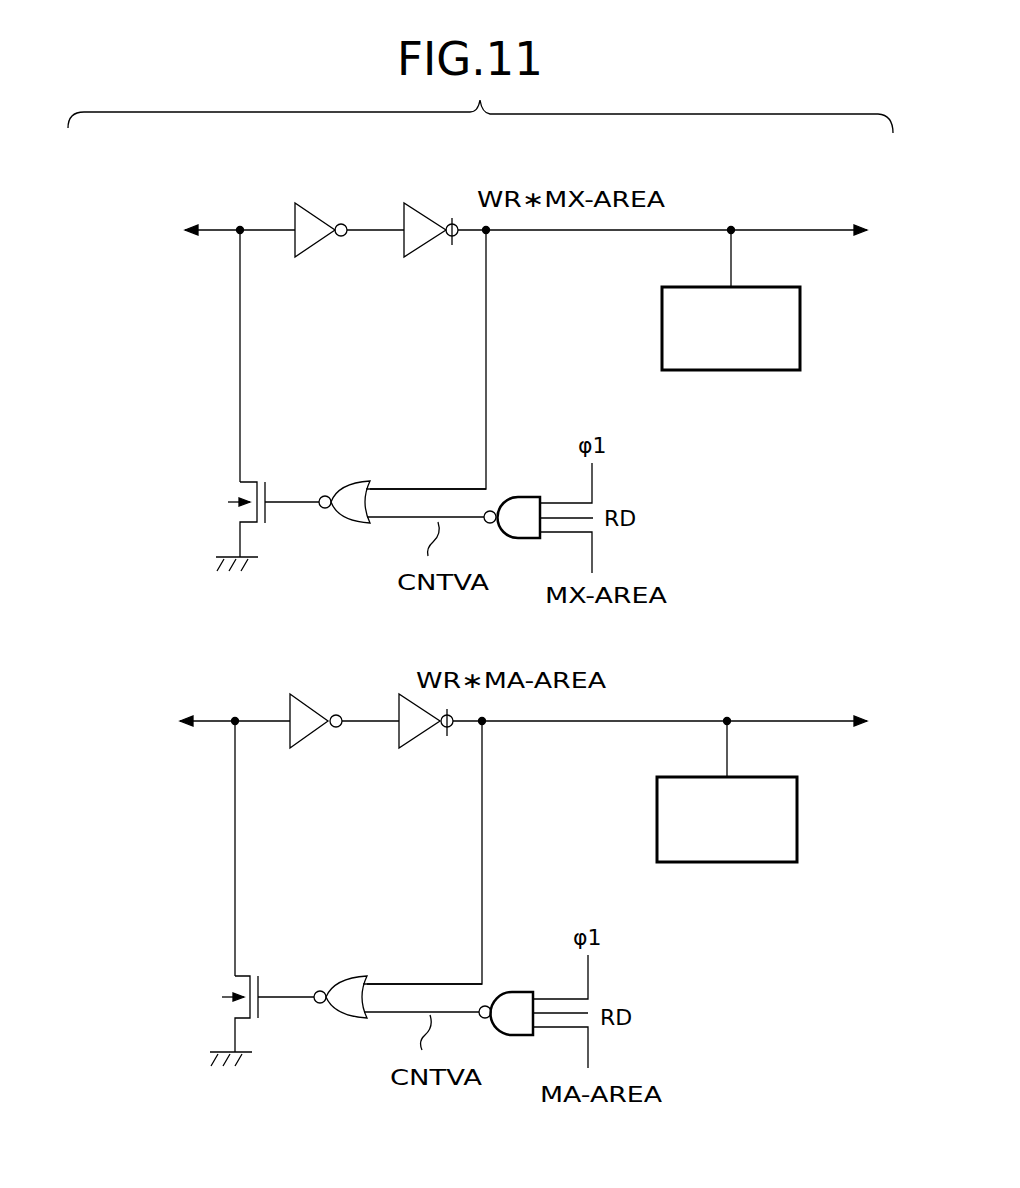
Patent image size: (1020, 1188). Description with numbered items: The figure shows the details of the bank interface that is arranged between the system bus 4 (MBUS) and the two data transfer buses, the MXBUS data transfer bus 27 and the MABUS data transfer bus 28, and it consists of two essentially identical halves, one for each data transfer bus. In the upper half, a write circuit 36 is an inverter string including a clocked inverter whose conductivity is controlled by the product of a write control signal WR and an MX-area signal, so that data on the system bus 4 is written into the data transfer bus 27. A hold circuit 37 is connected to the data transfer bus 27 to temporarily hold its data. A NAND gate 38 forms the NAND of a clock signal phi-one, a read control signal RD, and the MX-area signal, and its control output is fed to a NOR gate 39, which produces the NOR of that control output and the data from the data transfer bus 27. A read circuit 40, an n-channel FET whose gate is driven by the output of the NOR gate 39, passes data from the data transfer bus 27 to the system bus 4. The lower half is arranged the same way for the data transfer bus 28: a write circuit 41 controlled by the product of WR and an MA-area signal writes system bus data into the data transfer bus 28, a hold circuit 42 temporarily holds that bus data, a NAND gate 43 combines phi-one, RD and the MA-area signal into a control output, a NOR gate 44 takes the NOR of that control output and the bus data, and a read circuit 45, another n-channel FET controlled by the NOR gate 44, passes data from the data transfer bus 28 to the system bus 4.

The system bus 4 is at (180, 474).
The data transfer bus 27 is at (771, 229).
The data transfer bus 28 is at (768, 720).
The write circuit 36 is at (460, 190).
The hold circuit 37 is at (800, 298).
The NAND gate 38 is at (535, 495).
The NOR gate 39 is at (365, 480).
The read circuit 40 is at (228, 490).
The write circuit 41 is at (453, 765).
The hold circuit 42 is at (797, 790).
The NAND gate 43 is at (505, 990).
The NOR gate 44 is at (362, 975).
The read circuit 45 is at (225, 985).